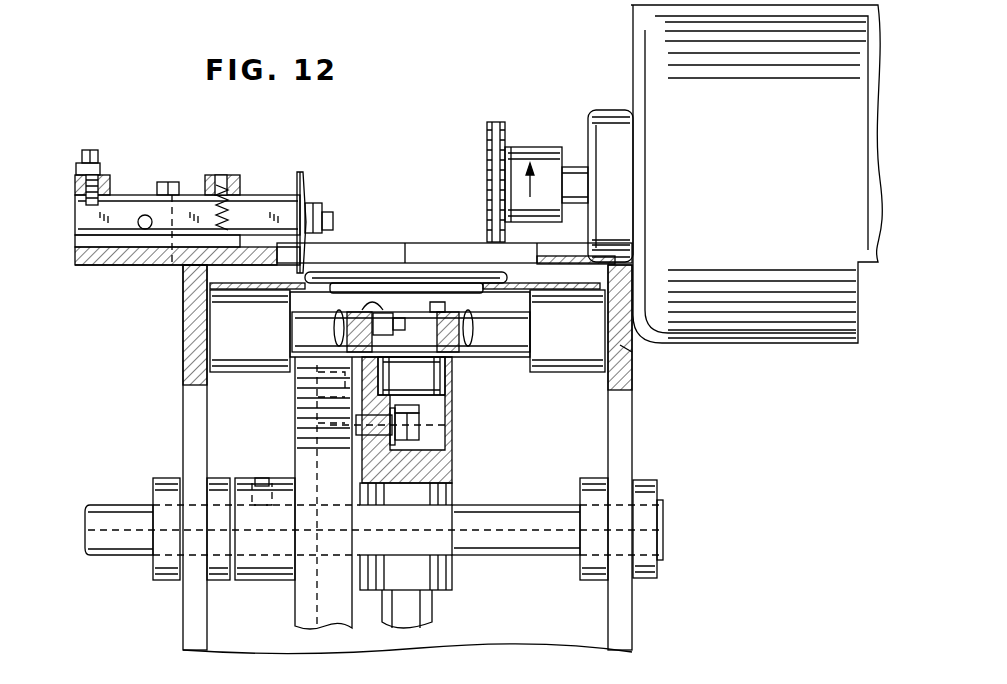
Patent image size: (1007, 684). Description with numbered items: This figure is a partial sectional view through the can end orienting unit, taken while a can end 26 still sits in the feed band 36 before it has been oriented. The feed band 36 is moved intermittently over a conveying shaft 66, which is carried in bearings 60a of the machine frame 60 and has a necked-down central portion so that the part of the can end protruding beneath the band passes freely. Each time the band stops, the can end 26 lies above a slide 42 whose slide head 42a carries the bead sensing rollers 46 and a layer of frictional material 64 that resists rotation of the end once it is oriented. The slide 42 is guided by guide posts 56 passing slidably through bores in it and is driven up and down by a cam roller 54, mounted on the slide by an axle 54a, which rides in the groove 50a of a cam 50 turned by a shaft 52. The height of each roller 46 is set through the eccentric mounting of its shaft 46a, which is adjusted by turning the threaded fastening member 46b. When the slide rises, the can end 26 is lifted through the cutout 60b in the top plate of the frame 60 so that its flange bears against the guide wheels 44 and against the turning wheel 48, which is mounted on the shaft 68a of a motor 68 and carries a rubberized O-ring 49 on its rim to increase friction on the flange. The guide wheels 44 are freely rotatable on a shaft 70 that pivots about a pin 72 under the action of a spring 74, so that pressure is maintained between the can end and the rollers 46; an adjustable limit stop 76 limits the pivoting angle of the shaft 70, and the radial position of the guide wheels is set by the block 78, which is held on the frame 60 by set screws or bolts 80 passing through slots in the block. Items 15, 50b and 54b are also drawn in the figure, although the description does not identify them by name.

The retaining ring 15 is at (308, 292).
The can end 26 is at (460, 277).
The feed band 36 is at (252, 283).
The slide 42 is at (452, 478).
The slide head 42a is at (447, 340).
The guide wheels 44 is at (314, 192).
The bead sensing rollers 46 is at (343, 300).
The shaft 46a is at (437, 302).
The threaded fastening member 46b is at (411, 376).
The turning wheel 48 is at (508, 140).
The rubberized O-ring 49 is at (497, 124).
The cam 50 is at (303, 618).
The groove 50a is at (318, 402).
The gear 50b is at (265, 478).
The shaft 52 is at (108, 512).
The cam roller 54 is at (330, 425).
The axle 54a is at (373, 440).
The washer 54b is at (403, 410).
The guide posts 56 is at (432, 606).
The machine frame 60 is at (138, 258).
The bearings 60a is at (632, 350).
The cutout 60b is at (385, 244).
The frictional material 64 is at (388, 366).
The conveying shaft 66 is at (224, 330).
The motor 68 is at (737, 158).
The shaft of motor 68a is at (648, 20).
The shaft 70 is at (85, 222).
The pin 72 is at (143, 214).
The spring 74 is at (222, 195).
The adjustable limit stop 76 is at (80, 198).
The block 78 is at (102, 246).
The set screws or bolts 80 is at (174, 183).